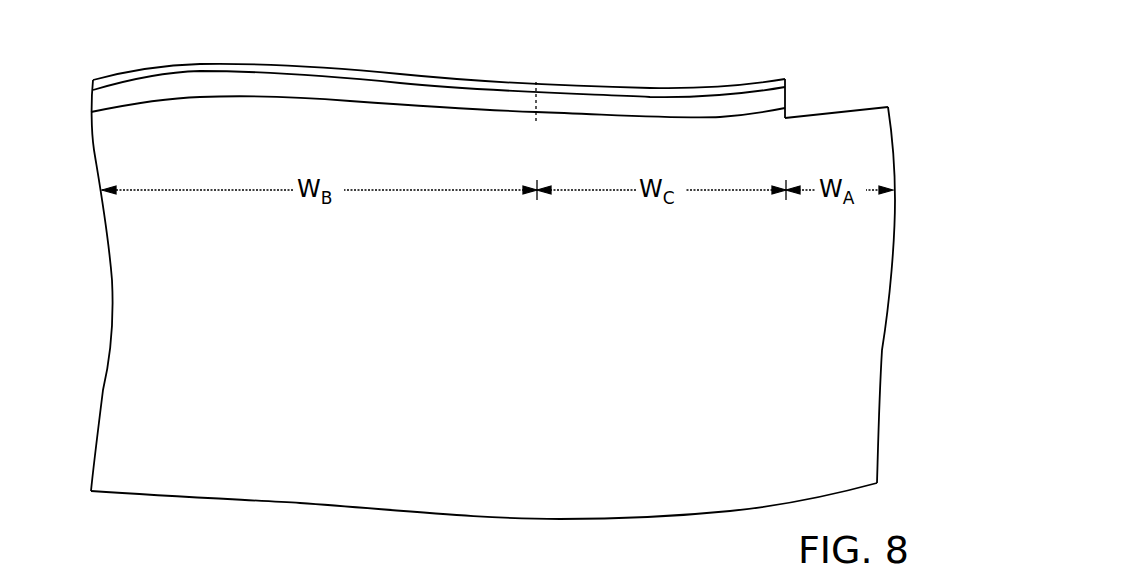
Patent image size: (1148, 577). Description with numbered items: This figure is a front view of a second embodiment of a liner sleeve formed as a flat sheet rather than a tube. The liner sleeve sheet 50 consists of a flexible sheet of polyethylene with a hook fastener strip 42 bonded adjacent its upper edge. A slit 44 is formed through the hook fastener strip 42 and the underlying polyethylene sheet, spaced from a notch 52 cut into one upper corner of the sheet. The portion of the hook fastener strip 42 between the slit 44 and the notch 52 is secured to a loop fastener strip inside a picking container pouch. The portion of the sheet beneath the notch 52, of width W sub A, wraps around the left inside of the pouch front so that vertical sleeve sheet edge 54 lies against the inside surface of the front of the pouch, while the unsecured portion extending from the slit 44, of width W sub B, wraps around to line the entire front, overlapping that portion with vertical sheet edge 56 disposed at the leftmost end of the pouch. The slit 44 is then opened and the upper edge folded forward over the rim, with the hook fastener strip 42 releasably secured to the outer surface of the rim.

The liner sleeve sheet 50 is at (300, 38).
The hook fastener strip 42 is at (352, 104).
The slit 44 is at (536, 83).
The notch 52 is at (857, 68).
The vertical sleeve sheet edge 54 is at (893, 270).
The vertical sheet edge 56 is at (110, 268).